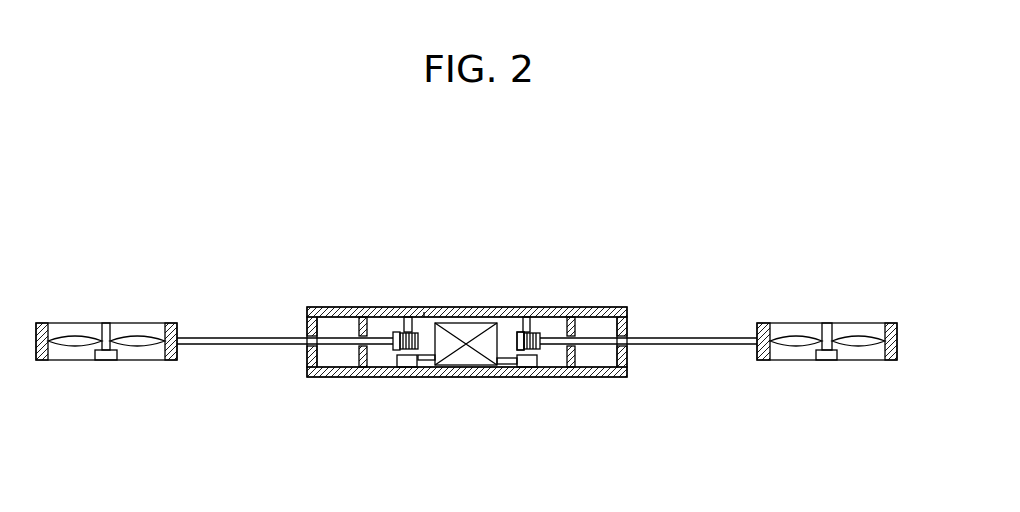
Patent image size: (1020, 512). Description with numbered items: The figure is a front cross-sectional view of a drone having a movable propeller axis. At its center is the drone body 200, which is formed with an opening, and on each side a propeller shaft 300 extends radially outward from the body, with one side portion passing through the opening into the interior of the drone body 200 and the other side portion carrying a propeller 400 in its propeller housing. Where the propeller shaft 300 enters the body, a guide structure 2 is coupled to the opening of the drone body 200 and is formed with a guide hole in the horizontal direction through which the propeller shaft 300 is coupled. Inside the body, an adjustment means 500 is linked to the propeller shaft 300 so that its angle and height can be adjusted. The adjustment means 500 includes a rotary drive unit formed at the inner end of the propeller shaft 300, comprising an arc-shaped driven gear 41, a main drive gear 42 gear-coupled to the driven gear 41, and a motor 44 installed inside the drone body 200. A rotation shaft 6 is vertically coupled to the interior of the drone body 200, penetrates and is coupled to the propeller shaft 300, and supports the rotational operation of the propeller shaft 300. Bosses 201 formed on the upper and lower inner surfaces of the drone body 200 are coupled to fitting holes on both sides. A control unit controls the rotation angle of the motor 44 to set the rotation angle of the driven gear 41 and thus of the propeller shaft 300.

The guide structure 2 is at (305, 318).
The rotation shaft 6 is at (577, 353).
The driven gear 41 is at (540, 347).
The main drive gear 42 is at (514, 345).
The motor 44 is at (526, 364).
The drone body 200 is at (347, 307).
The boss 201 is at (608, 376).
The propeller shaft 300 is at (693, 337).
The propeller 400 is at (848, 323).
The adjustment means 500 is at (425, 308).